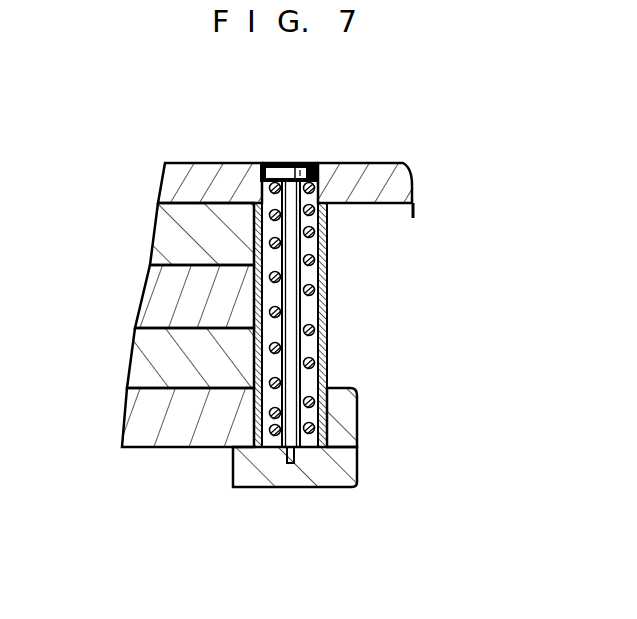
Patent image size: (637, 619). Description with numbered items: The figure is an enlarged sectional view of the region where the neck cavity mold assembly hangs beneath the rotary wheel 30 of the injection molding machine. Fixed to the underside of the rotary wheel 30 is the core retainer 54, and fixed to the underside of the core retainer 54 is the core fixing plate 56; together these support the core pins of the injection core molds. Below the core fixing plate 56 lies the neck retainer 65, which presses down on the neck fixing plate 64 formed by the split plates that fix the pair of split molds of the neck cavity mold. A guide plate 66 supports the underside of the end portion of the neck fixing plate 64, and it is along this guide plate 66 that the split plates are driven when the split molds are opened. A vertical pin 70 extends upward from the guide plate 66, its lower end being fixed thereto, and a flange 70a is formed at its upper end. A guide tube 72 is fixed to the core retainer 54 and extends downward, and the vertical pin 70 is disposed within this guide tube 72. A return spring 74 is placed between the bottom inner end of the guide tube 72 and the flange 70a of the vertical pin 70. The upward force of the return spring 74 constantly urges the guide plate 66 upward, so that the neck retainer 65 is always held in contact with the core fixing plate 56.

The rotary wheel 30 is at (393, 185).
The core retainer 54 is at (156, 228).
The core fixing plate 56 is at (146, 300).
The neck retainer 65 is at (133, 369).
The neck fixing plate 64 is at (130, 434).
The guide plate 66 is at (274, 465).
The vertical pin 70 is at (328, 258).
The flange 70a is at (283, 162).
The guide tube 72 is at (328, 314).
The return spring 74 is at (330, 358).